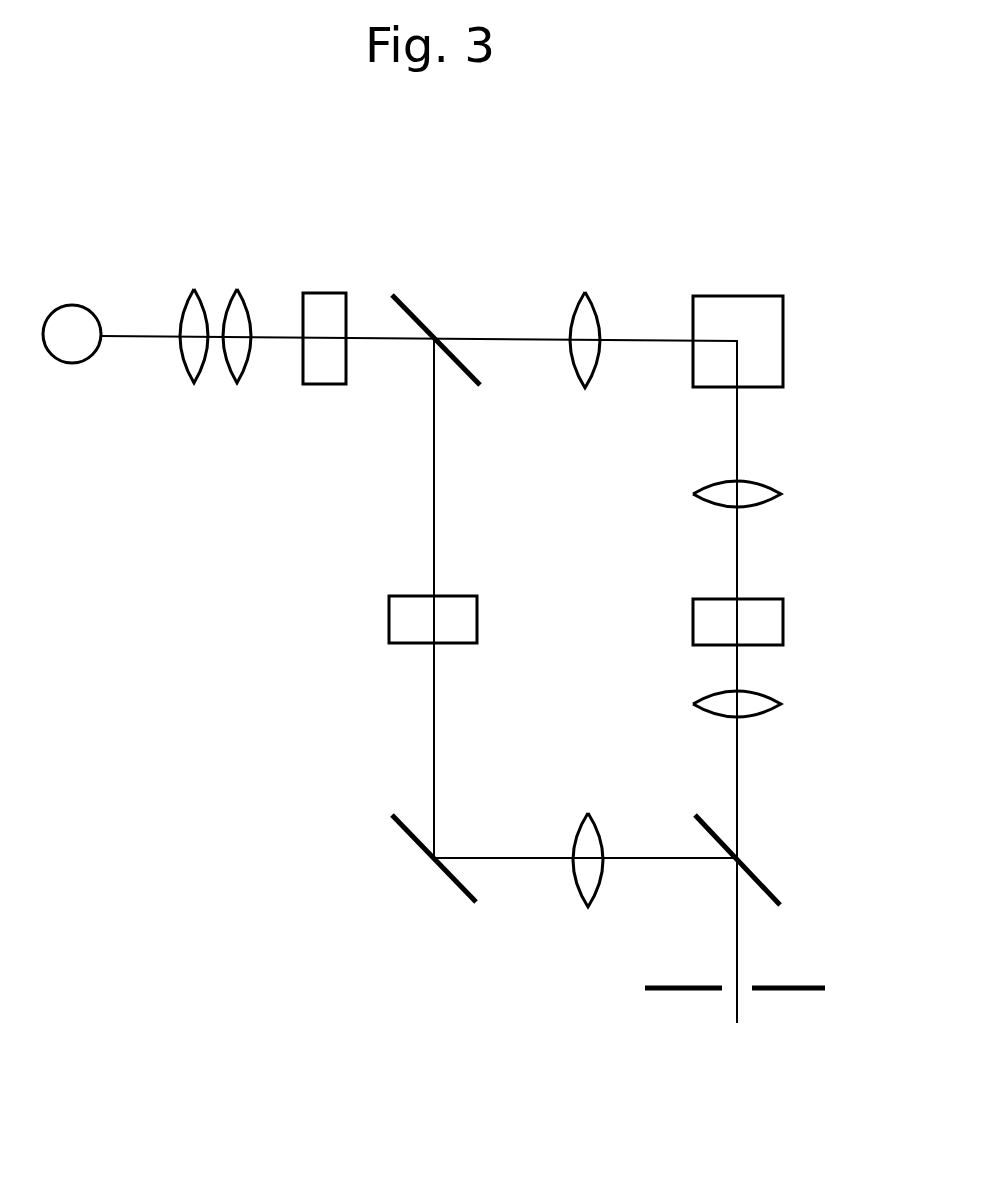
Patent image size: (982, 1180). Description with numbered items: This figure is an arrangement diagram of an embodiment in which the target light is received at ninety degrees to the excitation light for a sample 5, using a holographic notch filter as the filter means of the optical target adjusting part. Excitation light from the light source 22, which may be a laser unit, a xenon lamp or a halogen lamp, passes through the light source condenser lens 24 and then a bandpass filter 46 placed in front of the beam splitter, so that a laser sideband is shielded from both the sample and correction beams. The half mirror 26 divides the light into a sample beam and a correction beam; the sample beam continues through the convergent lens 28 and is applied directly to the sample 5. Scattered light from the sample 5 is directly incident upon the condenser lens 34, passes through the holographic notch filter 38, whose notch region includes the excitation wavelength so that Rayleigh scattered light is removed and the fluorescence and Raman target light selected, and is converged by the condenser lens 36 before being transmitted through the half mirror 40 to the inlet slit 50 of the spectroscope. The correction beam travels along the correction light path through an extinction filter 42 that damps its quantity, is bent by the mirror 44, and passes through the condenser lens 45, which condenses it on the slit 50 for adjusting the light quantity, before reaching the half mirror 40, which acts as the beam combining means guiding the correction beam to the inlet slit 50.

The light source 22 is at (73, 305).
The light source condenser lens 24 is at (213, 300).
The bandpass filter 46 is at (322, 295).
The half mirror 26 is at (403, 298).
The convergent lens 28 is at (573, 303).
The sample 5 is at (740, 295).
The condenser lens 34 is at (767, 487).
The holographic notch filter 38 is at (767, 600).
The condenser lens 36 is at (767, 697).
The half mirror 40 is at (770, 883).
The inlet slit 50 is at (793, 988).
The extinction filter 42 is at (388, 615).
The mirror 44 is at (403, 833).
The condenser lens 45 is at (575, 885).